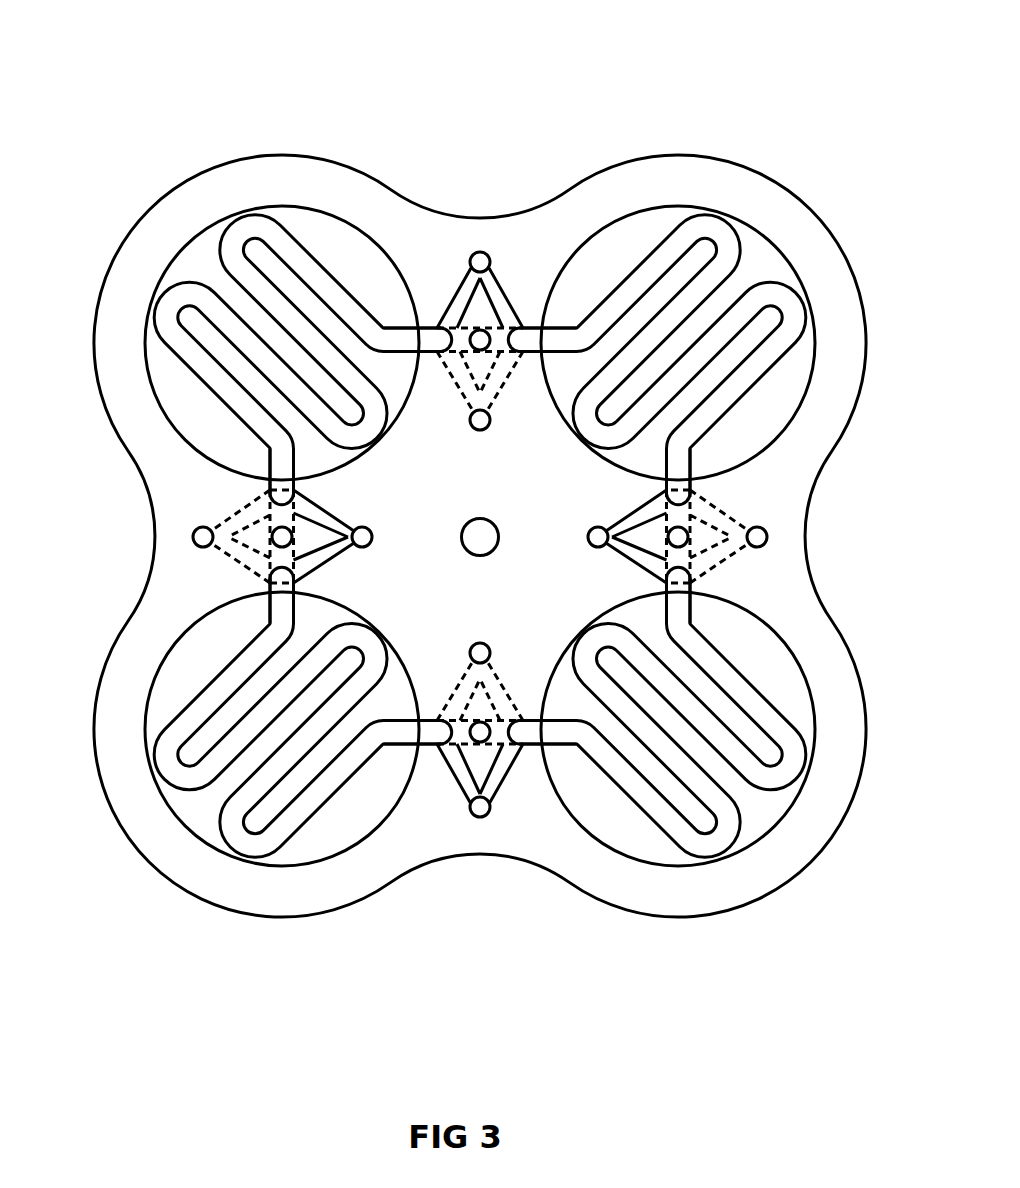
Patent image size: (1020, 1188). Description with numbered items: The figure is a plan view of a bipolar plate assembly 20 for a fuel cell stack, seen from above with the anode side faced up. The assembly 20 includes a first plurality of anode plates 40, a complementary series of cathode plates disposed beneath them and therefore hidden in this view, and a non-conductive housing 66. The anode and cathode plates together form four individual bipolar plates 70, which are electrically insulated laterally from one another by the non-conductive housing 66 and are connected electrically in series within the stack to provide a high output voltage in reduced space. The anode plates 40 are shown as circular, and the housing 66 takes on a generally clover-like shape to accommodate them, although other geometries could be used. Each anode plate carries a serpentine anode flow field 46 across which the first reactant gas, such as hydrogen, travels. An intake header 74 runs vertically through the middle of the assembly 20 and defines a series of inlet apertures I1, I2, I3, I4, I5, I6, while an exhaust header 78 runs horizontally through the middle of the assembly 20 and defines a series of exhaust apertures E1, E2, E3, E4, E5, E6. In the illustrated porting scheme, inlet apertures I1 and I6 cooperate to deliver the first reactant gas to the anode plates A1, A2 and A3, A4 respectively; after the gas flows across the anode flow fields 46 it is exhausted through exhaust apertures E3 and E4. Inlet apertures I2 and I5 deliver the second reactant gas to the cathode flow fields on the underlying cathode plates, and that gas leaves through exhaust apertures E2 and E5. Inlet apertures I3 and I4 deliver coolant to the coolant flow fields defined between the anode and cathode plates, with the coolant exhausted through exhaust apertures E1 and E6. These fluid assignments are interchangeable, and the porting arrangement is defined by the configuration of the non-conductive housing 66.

The bipolar plate assembly 20 is at (133, 92).
The anode plates 40 is at (320, 243).
The anode flow fields 46 is at (282, 238).
The non-conductive housing 66 is at (132, 287).
The bipolar plates 70 is at (200, 422).
The intake header 74 is at (522, 282).
The exhaust header 78 is at (227, 572).
The anode plate A1 is at (200, 257).
The anode plate A2 is at (760, 257).
The anode plate A3 is at (200, 815).
The anode plate A4 is at (760, 815).
The exhaust aperture E1 is at (200, 537).
The exhaust aperture E2 is at (284, 538).
The exhaust aperture E3 is at (364, 536).
The exhaust aperture E4 is at (596, 532).
The exhaust aperture E5 is at (672, 539).
The exhaust aperture E6 is at (760, 537).
The inlet aperture I1 is at (481, 258).
The inlet aperture I2 is at (480, 343).
The inlet aperture I3 is at (481, 425).
The inlet aperture I4 is at (481, 652).
The inlet aperture I5 is at (478, 730).
The inlet aperture I6 is at (481, 815).